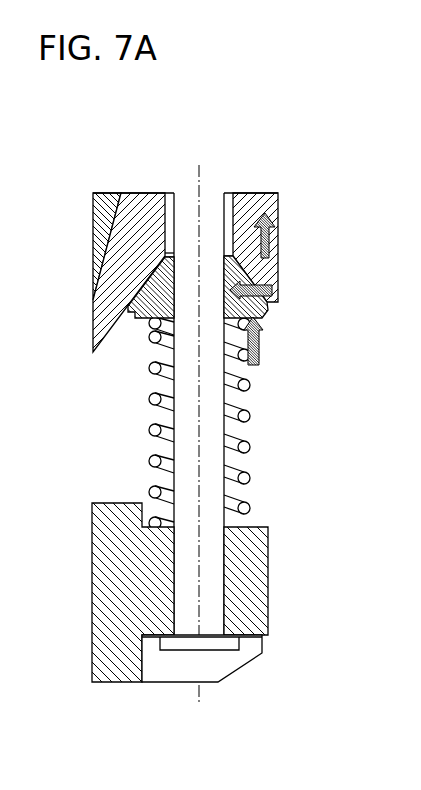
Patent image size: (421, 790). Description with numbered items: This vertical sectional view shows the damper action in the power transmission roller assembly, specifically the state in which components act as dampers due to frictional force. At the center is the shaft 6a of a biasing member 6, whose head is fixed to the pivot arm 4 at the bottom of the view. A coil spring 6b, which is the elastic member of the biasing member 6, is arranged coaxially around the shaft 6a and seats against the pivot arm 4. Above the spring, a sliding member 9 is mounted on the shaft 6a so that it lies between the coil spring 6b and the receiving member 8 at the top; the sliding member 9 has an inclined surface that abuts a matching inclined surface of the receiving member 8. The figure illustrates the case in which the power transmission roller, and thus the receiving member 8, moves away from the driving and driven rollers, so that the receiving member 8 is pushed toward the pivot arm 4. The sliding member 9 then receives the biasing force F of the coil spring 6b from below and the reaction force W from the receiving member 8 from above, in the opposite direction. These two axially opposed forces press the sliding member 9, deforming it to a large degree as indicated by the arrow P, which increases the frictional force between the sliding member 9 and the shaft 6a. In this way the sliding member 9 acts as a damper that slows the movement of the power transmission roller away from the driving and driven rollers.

The pivot arm 4 is at (247, 556).
The biasing member 6 is at (190, 414).
The shaft 6a is at (205, 453).
The coil spring 6b is at (150, 460).
The receiving member 8 is at (262, 273).
The sliding member 9 is at (155, 288).
The reaction force W is at (278, 235).
The deformation arrow P is at (263, 294).
The biasing force F is at (261, 341).